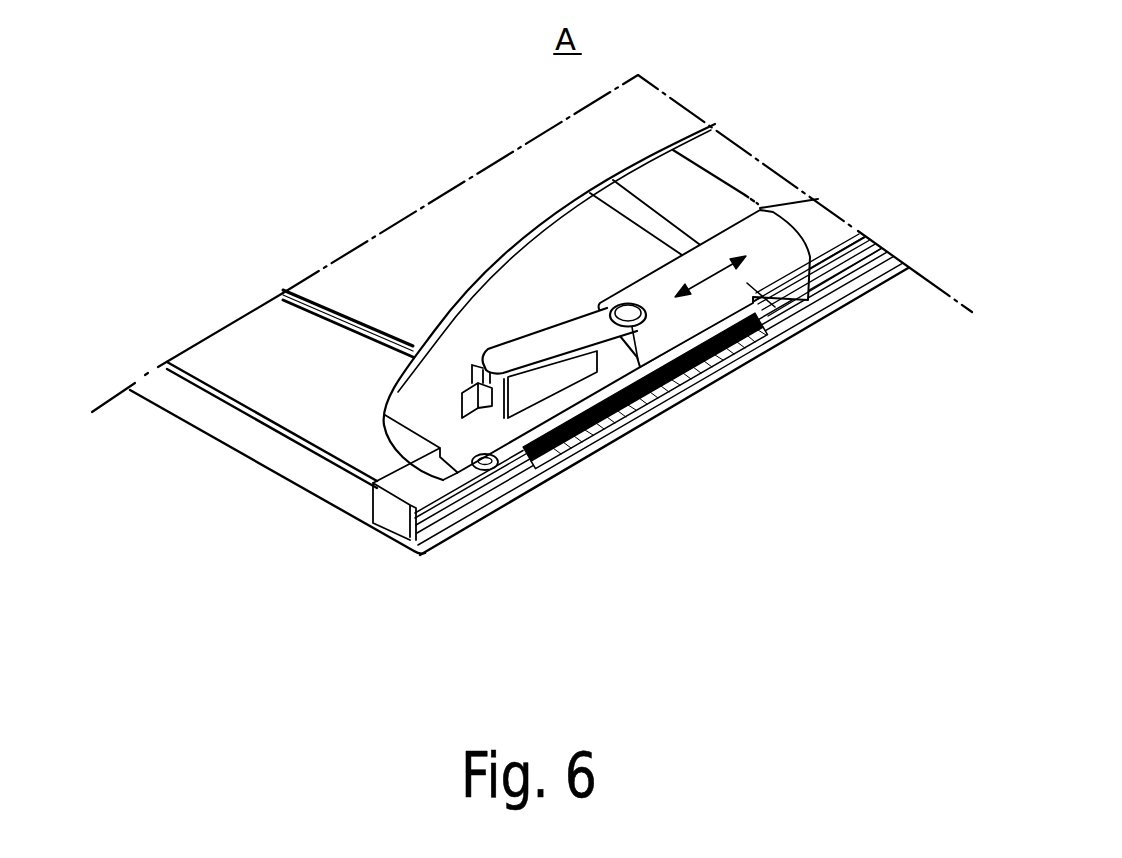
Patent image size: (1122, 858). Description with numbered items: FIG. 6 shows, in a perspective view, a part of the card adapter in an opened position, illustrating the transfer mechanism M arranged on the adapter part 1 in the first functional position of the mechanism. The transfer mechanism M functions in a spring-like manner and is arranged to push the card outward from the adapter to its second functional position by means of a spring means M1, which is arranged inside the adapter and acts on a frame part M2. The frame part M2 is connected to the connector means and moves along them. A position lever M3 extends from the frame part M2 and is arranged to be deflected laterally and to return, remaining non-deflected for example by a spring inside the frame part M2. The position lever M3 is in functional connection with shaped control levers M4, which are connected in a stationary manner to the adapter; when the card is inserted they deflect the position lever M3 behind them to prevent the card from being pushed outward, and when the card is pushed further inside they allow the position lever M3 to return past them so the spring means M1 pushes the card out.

The base plate 1 is at (268, 449).
The transfer mechanism M is at (733, 390).
The spring means M1 is at (597, 420).
The frame part M2 is at (762, 247).
The position lever M3 is at (597, 327).
The control levers M4 is at (545, 398).